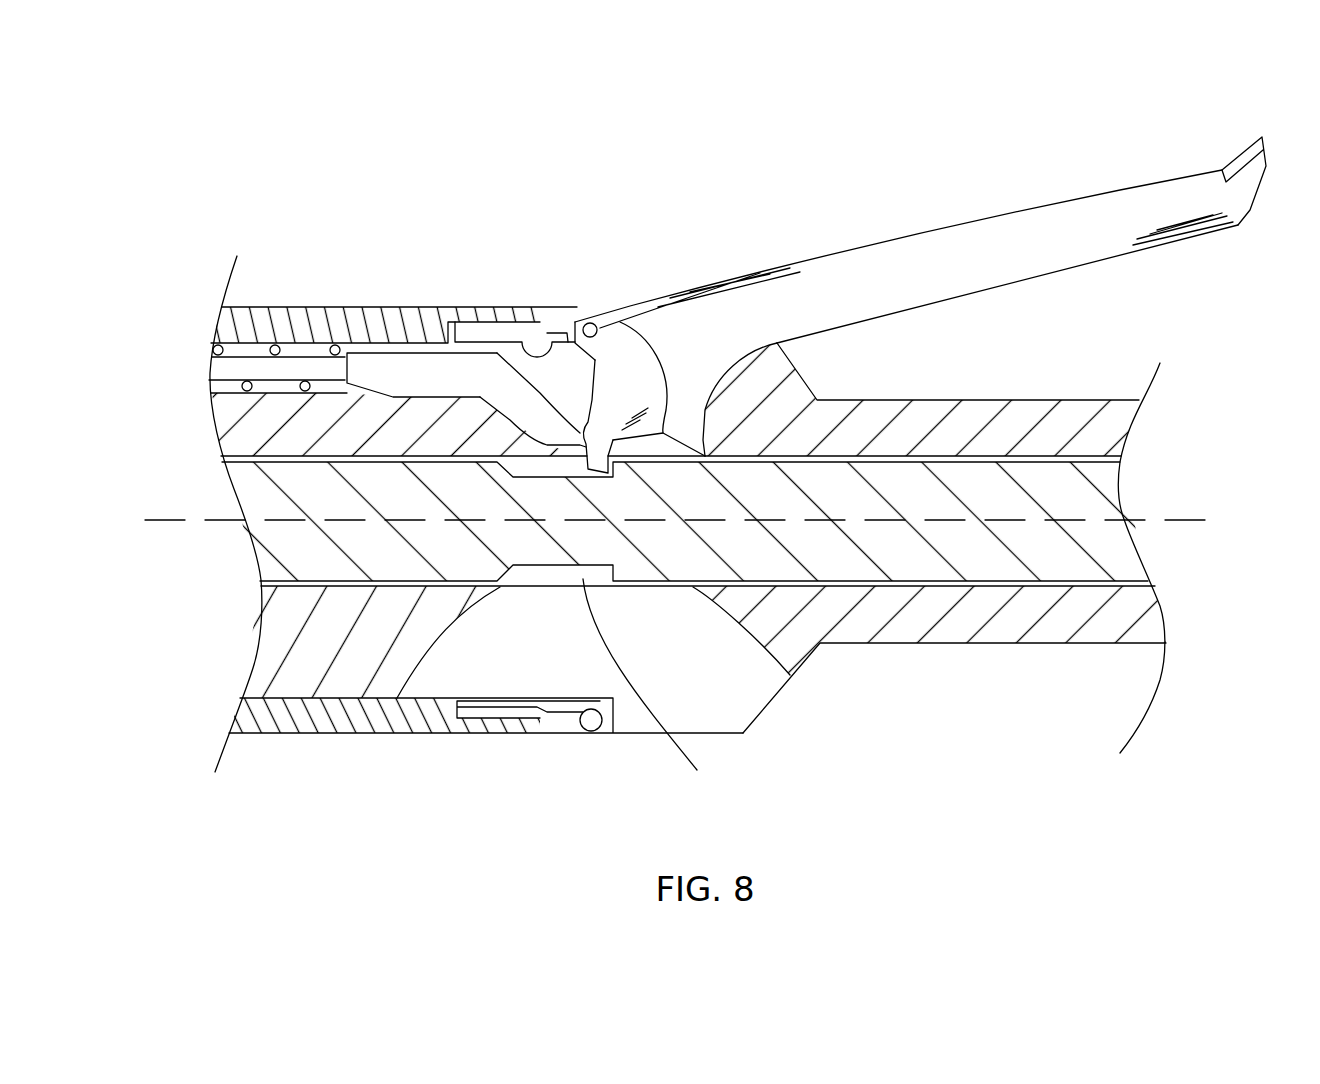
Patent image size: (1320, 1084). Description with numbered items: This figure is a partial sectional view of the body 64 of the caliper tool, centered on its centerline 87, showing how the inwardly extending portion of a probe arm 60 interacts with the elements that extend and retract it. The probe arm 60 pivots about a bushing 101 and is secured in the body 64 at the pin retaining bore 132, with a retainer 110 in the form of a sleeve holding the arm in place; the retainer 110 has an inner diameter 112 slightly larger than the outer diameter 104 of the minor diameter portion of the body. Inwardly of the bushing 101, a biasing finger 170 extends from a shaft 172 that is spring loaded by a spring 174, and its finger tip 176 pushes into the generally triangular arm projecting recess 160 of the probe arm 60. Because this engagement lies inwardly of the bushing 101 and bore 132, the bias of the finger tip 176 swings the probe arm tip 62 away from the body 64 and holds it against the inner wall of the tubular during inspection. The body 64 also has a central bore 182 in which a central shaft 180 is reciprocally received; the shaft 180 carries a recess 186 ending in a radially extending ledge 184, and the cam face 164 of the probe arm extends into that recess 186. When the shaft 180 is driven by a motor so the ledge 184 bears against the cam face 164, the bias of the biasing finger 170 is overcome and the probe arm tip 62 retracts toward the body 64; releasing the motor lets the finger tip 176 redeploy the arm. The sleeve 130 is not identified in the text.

The probe arm 60 is at (964, 270).
The probe arm tip 62 is at (1262, 133).
The body 64 is at (330, 190).
The centerline 87 is at (1158, 525).
The bushing 101 is at (597, 318).
The outer diameter 104 is at (560, 323).
The retainer 110 is at (557, 715).
The inner diameter 112 is at (518, 337).
The housing sleeve 130 is at (487, 735).
The pin retaining bore 132 is at (592, 733).
The arm projecting recess 160 is at (610, 425).
The cam face 164 is at (616, 430).
The biasing finger 170 is at (460, 381).
The shaft 172 is at (233, 365).
The spring 174 is at (267, 342).
The finger tip 176 is at (590, 437).
The central shaft 180 is at (1003, 490).
The central bore 182 is at (1118, 461).
The ledge 184 is at (605, 575).
The recess 186 is at (662, 681).